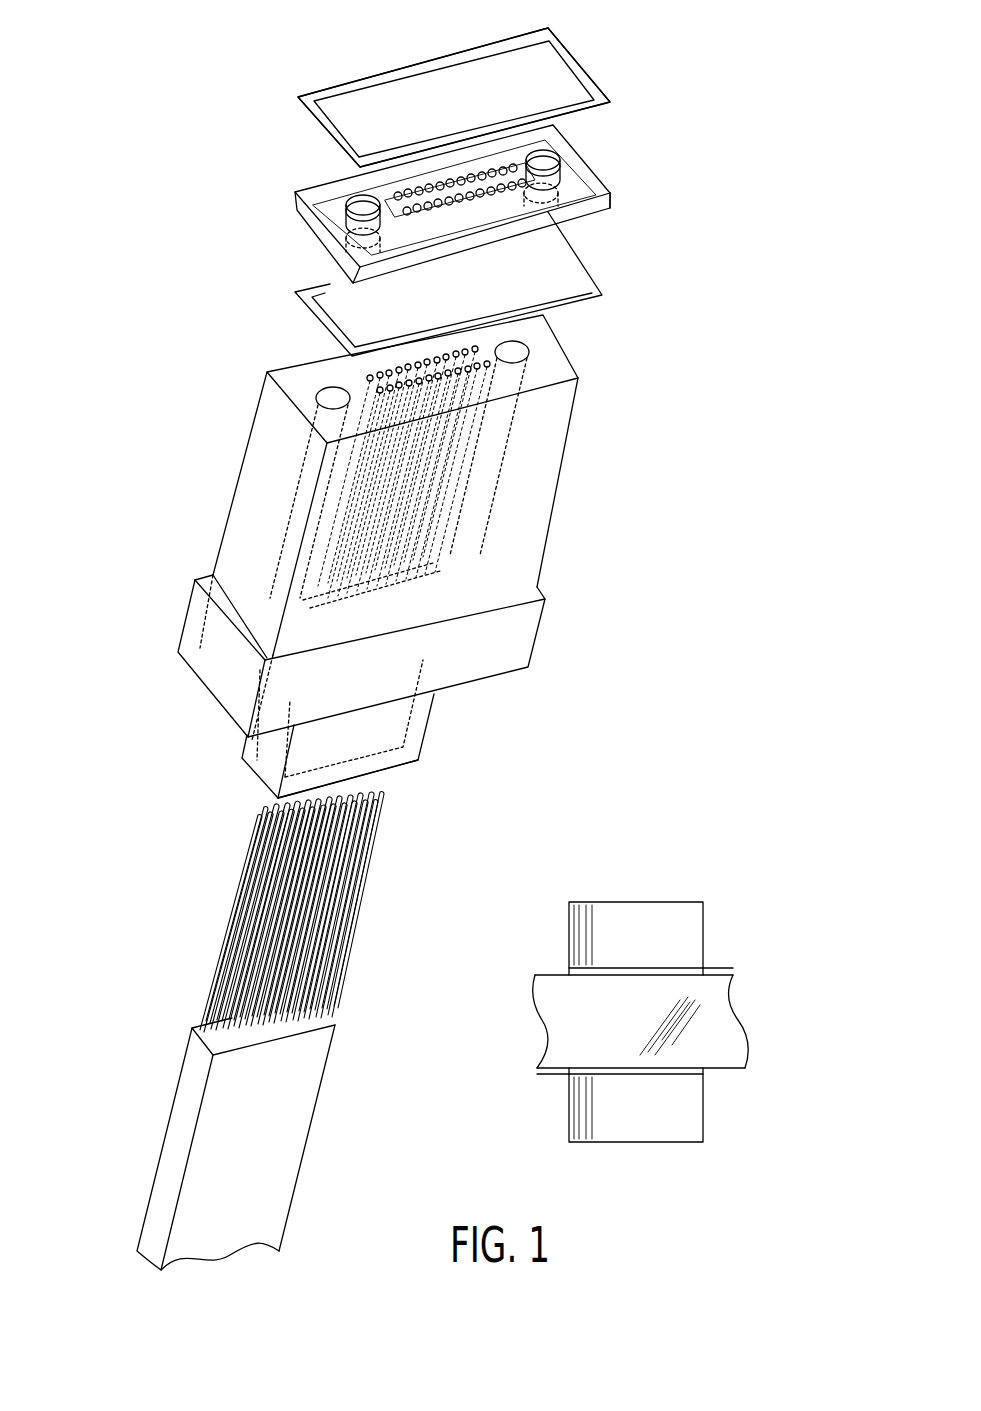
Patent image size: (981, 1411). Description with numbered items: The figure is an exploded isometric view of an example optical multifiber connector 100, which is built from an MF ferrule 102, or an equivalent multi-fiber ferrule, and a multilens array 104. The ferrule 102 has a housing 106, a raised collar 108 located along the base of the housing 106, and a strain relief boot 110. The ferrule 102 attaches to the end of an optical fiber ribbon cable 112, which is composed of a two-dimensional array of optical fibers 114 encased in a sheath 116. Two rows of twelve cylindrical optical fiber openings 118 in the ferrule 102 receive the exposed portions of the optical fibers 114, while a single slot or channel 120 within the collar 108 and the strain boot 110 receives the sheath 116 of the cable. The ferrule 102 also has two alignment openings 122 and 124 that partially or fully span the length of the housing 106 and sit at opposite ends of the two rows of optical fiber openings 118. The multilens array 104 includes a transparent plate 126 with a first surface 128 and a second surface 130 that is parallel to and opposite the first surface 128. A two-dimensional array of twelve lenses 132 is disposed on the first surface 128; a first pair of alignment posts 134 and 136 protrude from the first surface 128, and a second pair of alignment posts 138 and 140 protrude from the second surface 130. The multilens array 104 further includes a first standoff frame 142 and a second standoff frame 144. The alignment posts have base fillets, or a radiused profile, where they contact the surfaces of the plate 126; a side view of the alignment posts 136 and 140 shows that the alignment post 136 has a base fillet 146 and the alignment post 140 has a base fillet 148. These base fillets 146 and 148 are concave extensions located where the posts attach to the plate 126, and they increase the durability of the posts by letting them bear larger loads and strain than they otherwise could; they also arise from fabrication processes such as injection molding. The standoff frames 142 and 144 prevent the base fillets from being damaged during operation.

The optical multifiber connector 100 is at (153, 79).
The MF ferrule 102 is at (643, 520).
The multilens array 104 is at (737, 122).
The housing 106 is at (243, 540).
The raised collar 108 is at (540, 632).
The strain relief boot 110 is at (423, 737).
The optical fiber ribbon cable 112 is at (350, 1096).
The optical fibers 114 is at (265, 827).
The sheath 116 is at (180, 1121).
The optical fiber openings 118 is at (377, 397).
The slot 120 is at (411, 789).
The alignment opening 122 is at (335, 396).
The alignment opening 124 is at (514, 351).
The transparent plate 126 is at (296, 200).
The first surface 128 is at (608, 197).
The second surface 130 is at (548, 203).
The lenses 132 is at (395, 195).
The alignment post 134 is at (388, 203).
The alignment post 136 is at (548, 160).
The alignment post 138 is at (358, 247).
The alignment post 140 is at (553, 232).
The first standoff frame 142 is at (575, 66).
The second standoff frame 144 is at (603, 296).
The base fillet 146 is at (707, 968).
The base fillet 148 is at (570, 1070).